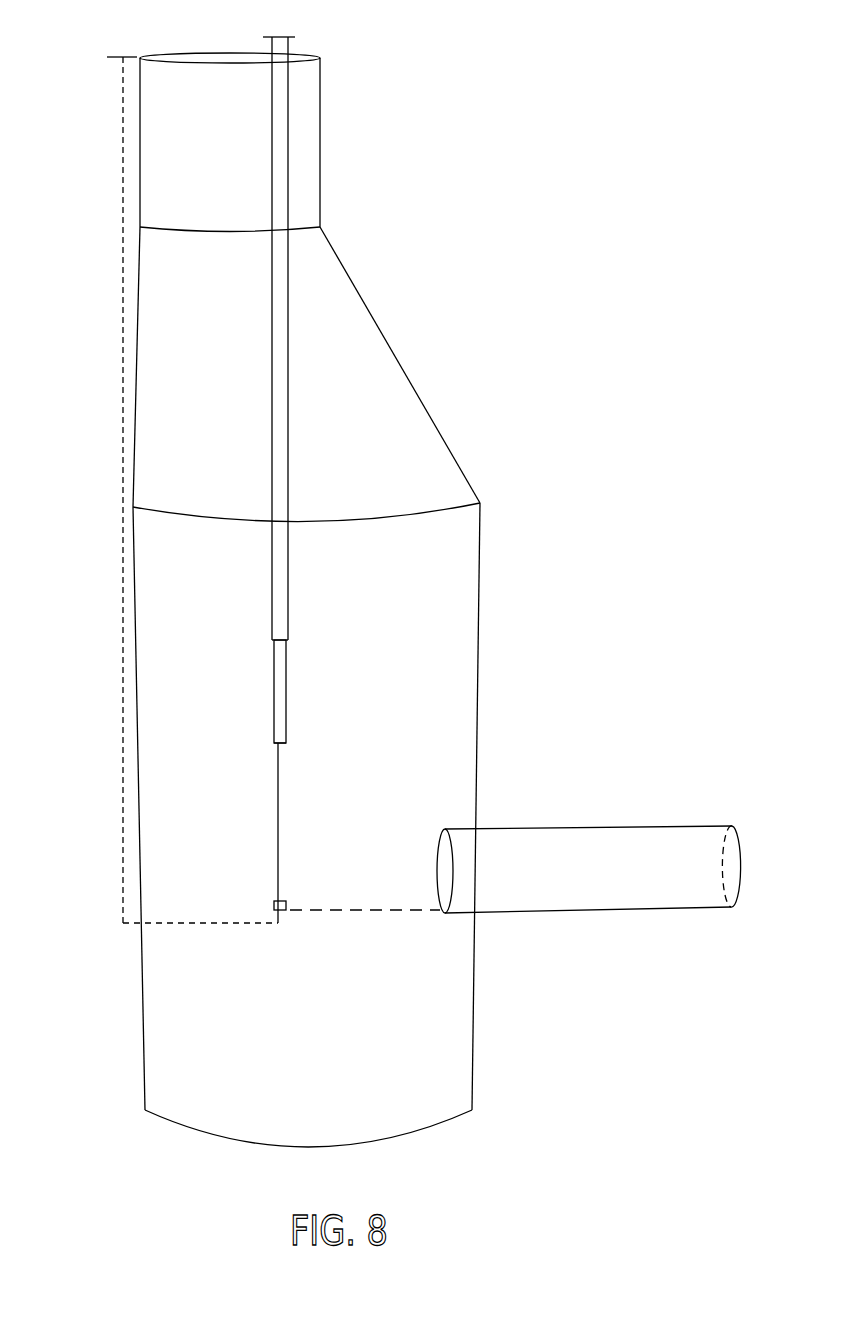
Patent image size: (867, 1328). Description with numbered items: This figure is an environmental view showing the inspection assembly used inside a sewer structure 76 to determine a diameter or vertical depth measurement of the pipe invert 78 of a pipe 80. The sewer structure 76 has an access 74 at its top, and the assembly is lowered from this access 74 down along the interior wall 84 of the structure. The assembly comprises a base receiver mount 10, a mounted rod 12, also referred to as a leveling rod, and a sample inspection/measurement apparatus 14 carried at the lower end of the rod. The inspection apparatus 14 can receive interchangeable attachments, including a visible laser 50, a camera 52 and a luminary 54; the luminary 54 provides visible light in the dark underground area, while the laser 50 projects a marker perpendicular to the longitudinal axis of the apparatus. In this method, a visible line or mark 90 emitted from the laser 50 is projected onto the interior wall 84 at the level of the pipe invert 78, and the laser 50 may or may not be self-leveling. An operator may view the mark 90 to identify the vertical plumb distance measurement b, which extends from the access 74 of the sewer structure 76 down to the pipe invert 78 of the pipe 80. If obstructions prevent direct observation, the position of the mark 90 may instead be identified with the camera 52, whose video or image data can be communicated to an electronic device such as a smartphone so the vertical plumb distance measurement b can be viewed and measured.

The base receiver mount 10 is at (282, 688).
The mounted rod 12 is at (277, 417).
The inspection apparatus 14 is at (278, 823).
The visible laser 50 is at (249, 879).
The camera 52 is at (274, 903).
The luminary 54 is at (278, 748).
The access 74 is at (220, 58).
The sewer structure 76 is at (472, 406).
The pipe invert 78 is at (445, 913).
The pipe 80 is at (648, 835).
The interior wall 84 is at (479, 730).
The visible line or mark 90 is at (348, 912).
The vertical plumb distance measurement b is at (123, 525).